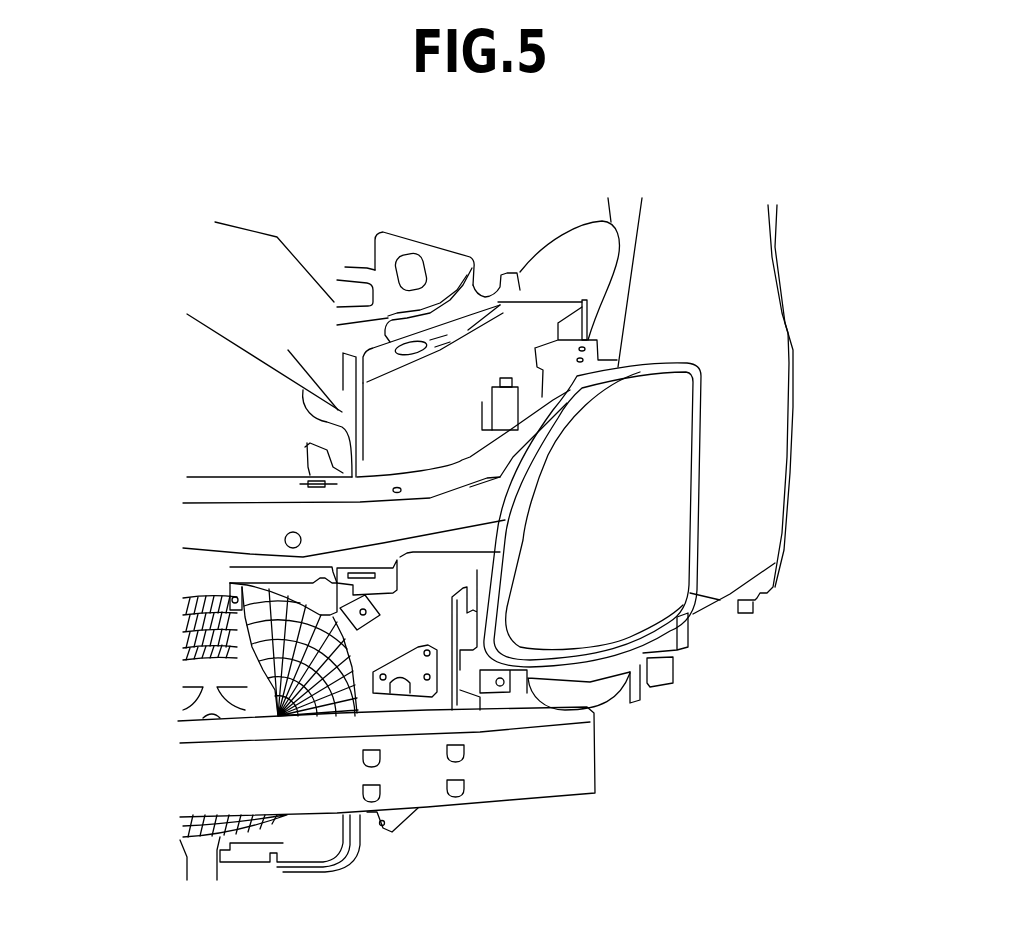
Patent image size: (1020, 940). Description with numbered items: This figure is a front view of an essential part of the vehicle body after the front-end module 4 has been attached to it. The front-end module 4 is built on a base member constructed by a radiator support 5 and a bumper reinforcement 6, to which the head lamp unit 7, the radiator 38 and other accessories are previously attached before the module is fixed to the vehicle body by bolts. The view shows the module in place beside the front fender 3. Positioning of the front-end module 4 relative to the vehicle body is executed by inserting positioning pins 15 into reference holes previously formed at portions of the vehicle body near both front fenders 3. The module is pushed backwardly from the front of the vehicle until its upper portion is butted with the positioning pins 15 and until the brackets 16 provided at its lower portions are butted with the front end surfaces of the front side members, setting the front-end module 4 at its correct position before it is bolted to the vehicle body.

The front fender 3 is at (733, 327).
The front-end module 4 is at (617, 740).
The radiator support 5 is at (223, 523).
The bumper reinforcement 6 is at (545, 778).
The head lamp unit 7 is at (675, 515).
The positioning pin 15 is at (587, 320).
The bracket 16 is at (423, 690).
The radiator 38 is at (183, 623).